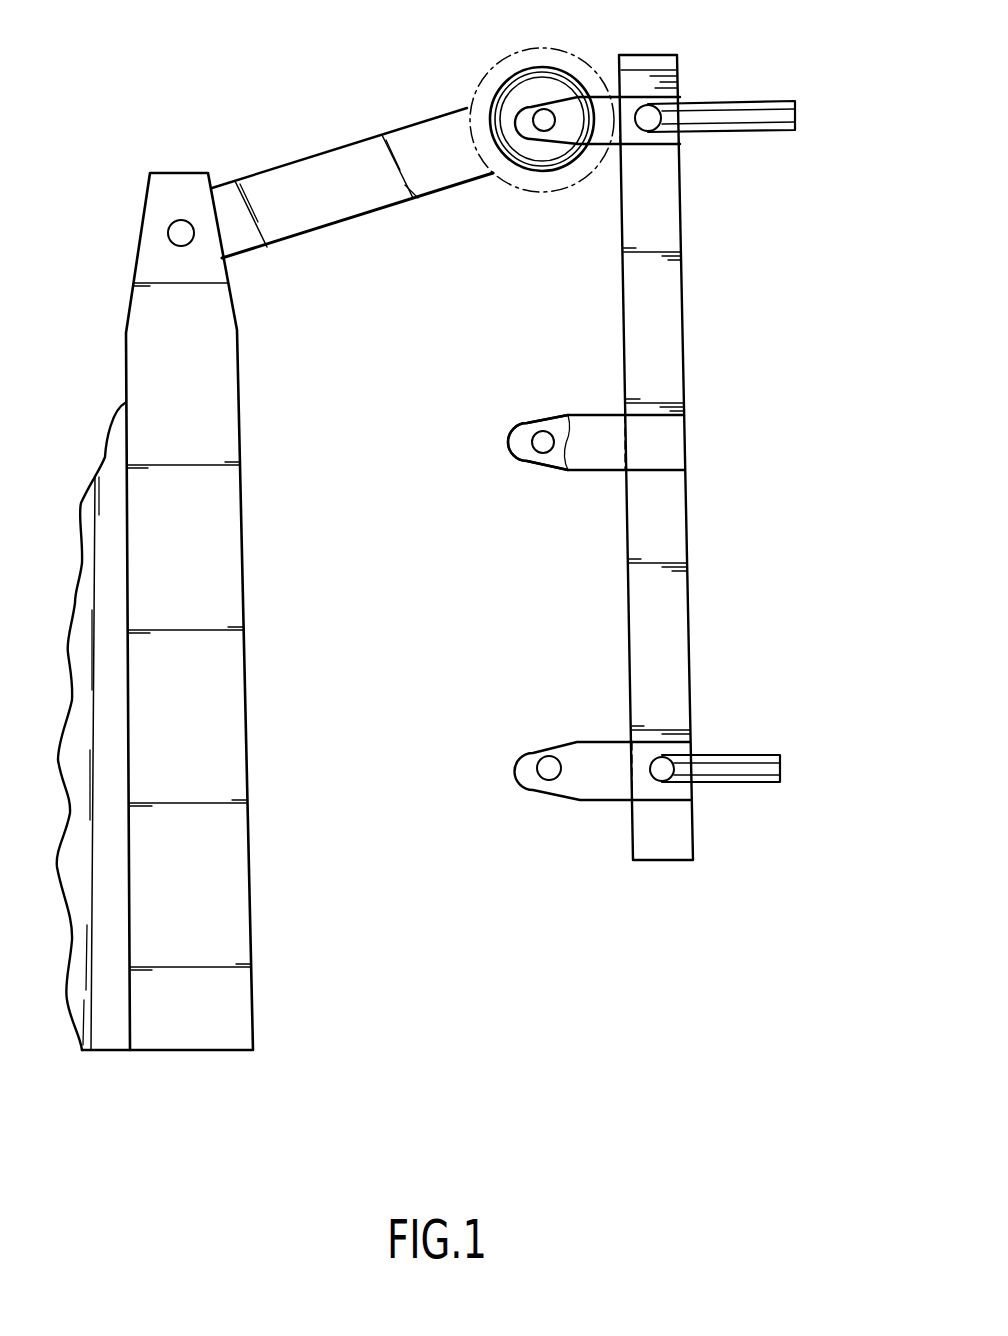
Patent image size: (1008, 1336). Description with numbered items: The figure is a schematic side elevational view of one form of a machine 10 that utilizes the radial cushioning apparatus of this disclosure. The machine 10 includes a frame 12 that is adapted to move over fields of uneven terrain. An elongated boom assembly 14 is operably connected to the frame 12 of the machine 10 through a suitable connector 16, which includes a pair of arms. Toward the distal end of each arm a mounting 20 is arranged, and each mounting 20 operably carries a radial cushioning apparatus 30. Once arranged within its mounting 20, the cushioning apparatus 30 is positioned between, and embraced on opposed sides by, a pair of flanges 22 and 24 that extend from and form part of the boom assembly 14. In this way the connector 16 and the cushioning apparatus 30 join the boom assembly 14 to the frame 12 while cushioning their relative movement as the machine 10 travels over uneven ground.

The machine 10 is at (282, 1004).
The frame 12 is at (108, 1040).
The boom assembly 14 is at (790, 80).
The connector 16 is at (286, 138).
The mounting 20 is at (545, 163).
The flange 22 is at (594, 135).
The flange 24 is at (523, 440).
The radial cushioning apparatus 30 is at (561, 58).